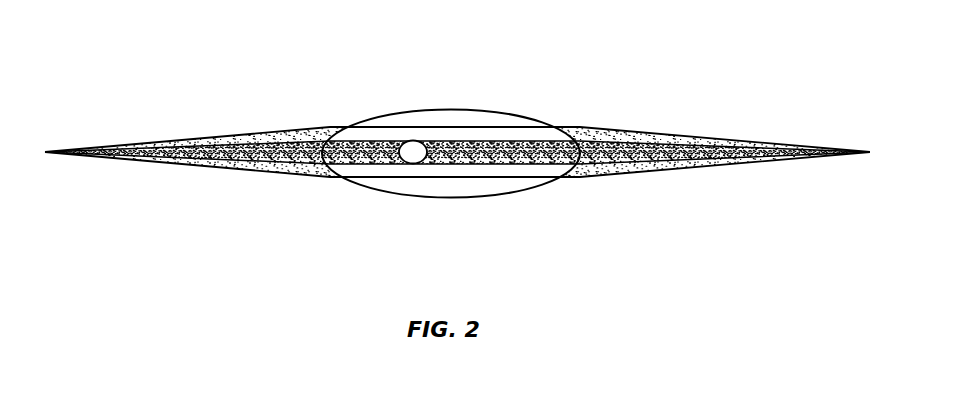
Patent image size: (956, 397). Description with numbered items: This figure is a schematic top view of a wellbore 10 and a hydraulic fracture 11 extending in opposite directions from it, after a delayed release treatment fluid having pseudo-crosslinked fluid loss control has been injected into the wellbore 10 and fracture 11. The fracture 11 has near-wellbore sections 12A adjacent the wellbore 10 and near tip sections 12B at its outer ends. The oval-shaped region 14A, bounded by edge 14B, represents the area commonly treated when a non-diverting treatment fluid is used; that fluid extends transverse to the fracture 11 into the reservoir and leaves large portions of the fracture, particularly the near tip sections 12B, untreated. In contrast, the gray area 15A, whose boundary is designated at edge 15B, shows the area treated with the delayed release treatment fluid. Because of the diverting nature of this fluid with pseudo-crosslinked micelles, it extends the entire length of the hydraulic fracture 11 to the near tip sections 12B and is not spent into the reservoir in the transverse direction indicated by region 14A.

The wellbore 10 is at (416, 146).
The hydraulic fracture 11 is at (247, 137).
The near-wellbore sections of hydraulic fracture 12A is at (370, 164).
The near tip sections of hydraulic fracture 12B is at (146, 158).
The oval-shaped region 14A is at (514, 124).
The edge of area treated by non-diverting treatment fluid 14B is at (406, 111).
The gray area treated with delayed release treatment fluid 15A is at (308, 132).
The edge of gray area treated with delayed release treatment fluid 15B is at (614, 132).